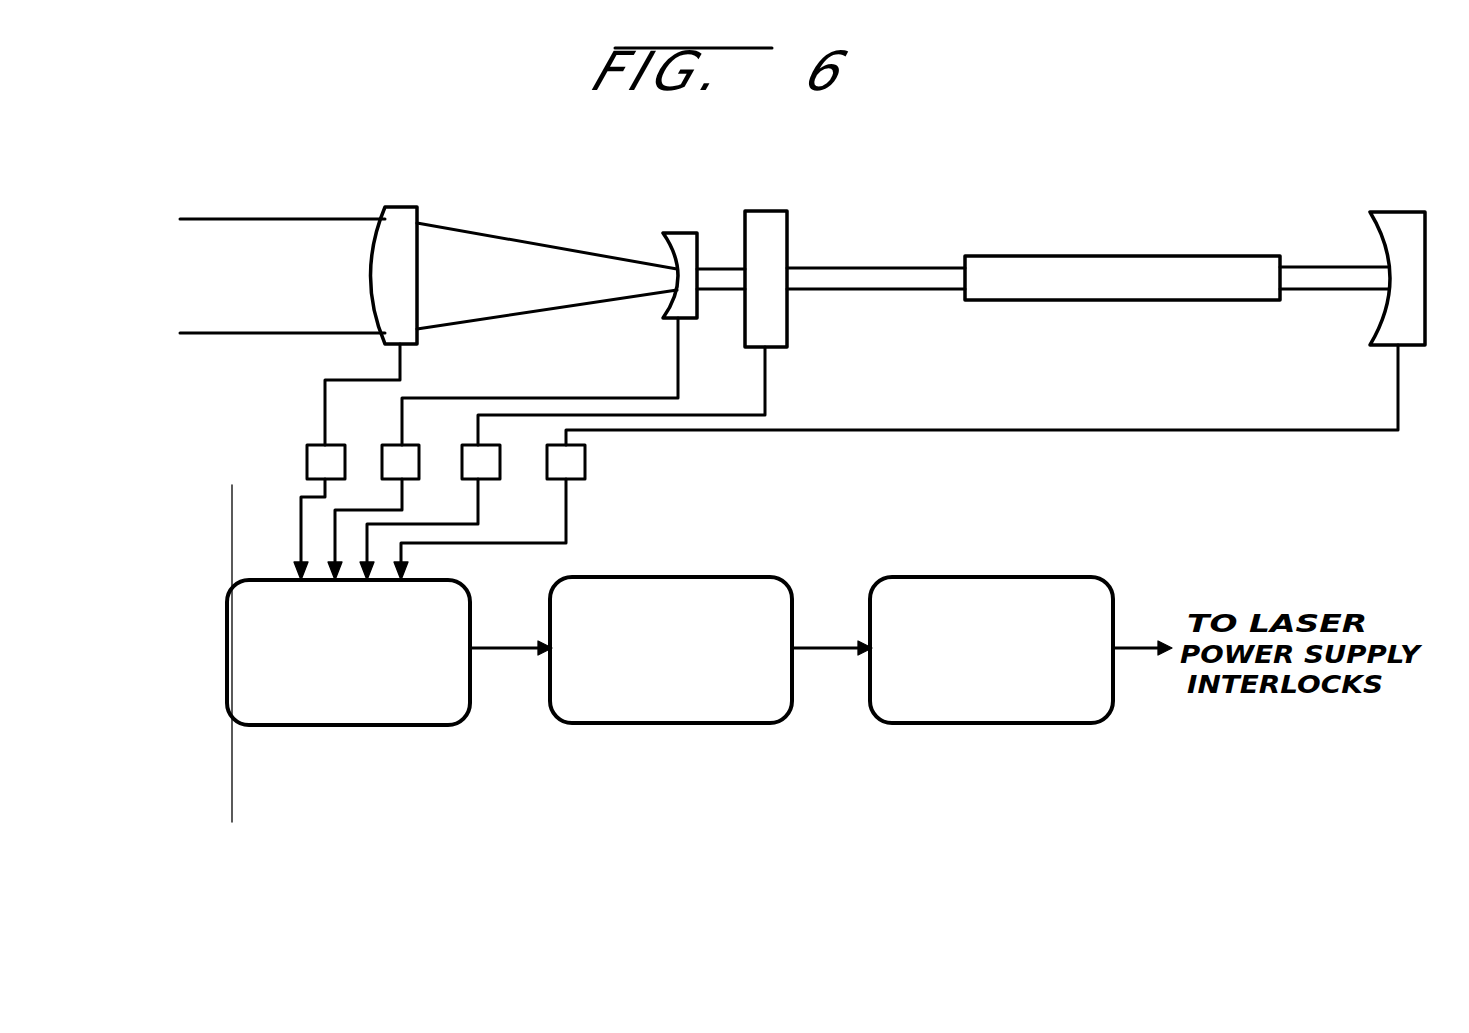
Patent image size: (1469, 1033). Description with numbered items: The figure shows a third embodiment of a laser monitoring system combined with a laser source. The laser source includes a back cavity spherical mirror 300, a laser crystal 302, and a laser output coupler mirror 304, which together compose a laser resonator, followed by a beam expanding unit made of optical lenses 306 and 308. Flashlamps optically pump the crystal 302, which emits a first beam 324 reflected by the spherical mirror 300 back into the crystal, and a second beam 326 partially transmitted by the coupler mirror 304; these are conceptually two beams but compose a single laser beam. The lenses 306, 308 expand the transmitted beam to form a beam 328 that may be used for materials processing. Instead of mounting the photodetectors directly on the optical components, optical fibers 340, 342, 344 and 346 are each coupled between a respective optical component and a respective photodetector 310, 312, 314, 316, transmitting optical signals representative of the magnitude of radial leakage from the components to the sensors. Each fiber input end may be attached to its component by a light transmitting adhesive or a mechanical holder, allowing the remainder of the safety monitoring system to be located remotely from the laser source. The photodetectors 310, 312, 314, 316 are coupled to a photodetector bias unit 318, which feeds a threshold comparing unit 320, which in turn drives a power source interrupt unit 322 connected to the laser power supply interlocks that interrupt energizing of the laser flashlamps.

The back cavity spherical mirror 300 is at (1400, 210).
The laser crystal 302 is at (1085, 255).
The laser output coupler mirror 304 is at (770, 210).
The optical lens 306 is at (680, 232).
The optical lens 308 is at (405, 207).
The photodiode 310 is at (585, 462).
The photodiode 312 is at (500, 465).
The photodiode 314 is at (382, 462).
The photodiode 316 is at (305, 460).
The photodetector bias unit 318 is at (355, 725).
The threshold comparing unit 320 is at (680, 723).
The power source interrupt unit 322 is at (997, 723).
The first beam 324 is at (1338, 292).
The second beam 326 is at (908, 292).
The beam 328 is at (275, 215).
The optical fiber 340 is at (982, 418).
The optical fiber 342 is at (767, 398).
The optical fiber 344 is at (676, 360).
The optical fiber 346 is at (405, 370).